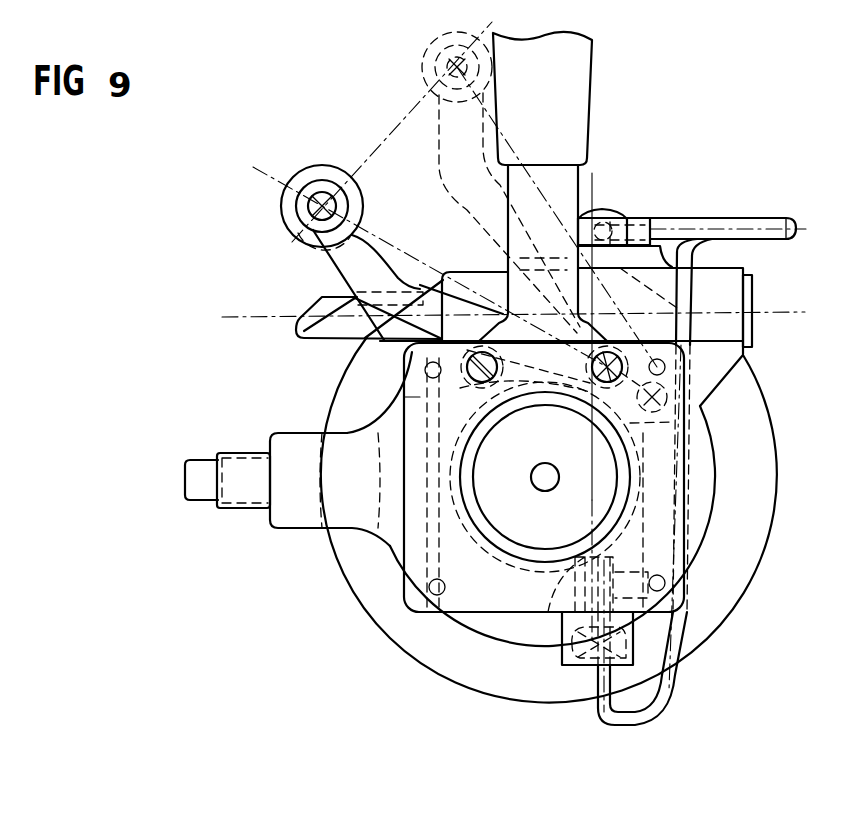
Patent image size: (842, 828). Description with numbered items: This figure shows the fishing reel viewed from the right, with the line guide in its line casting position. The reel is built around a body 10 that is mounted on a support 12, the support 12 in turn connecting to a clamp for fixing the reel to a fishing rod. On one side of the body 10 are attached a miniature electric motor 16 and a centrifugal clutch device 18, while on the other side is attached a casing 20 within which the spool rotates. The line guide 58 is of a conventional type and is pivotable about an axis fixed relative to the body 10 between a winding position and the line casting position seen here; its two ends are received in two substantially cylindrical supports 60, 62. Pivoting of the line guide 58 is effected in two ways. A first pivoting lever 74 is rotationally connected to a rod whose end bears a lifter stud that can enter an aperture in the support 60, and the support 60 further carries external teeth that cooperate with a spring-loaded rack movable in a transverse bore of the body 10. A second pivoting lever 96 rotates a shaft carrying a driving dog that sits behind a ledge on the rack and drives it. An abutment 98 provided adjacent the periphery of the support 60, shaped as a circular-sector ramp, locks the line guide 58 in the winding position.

The body 10 is at (467, 603).
The support 12 is at (558, 182).
The miniature electric motor 16 is at (508, 512).
The centrifugal clutch device 18 is at (530, 550).
The casing 20 is at (760, 463).
The line guide 58 is at (678, 688).
The cylindrical support 60 is at (603, 213).
The cylindrical support 62 is at (562, 662).
The first pivoting lever 74 is at (313, 310).
The second pivoting lever 96 is at (363, 253).
The abutment 98 is at (612, 235).